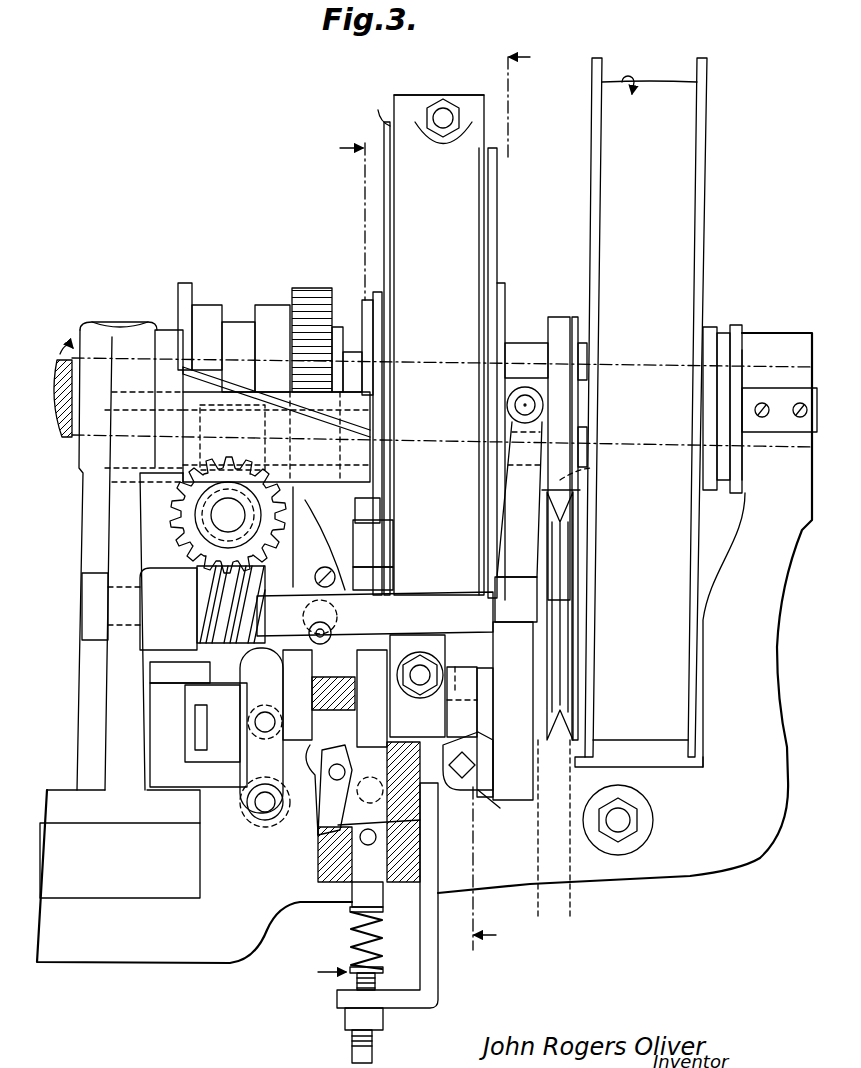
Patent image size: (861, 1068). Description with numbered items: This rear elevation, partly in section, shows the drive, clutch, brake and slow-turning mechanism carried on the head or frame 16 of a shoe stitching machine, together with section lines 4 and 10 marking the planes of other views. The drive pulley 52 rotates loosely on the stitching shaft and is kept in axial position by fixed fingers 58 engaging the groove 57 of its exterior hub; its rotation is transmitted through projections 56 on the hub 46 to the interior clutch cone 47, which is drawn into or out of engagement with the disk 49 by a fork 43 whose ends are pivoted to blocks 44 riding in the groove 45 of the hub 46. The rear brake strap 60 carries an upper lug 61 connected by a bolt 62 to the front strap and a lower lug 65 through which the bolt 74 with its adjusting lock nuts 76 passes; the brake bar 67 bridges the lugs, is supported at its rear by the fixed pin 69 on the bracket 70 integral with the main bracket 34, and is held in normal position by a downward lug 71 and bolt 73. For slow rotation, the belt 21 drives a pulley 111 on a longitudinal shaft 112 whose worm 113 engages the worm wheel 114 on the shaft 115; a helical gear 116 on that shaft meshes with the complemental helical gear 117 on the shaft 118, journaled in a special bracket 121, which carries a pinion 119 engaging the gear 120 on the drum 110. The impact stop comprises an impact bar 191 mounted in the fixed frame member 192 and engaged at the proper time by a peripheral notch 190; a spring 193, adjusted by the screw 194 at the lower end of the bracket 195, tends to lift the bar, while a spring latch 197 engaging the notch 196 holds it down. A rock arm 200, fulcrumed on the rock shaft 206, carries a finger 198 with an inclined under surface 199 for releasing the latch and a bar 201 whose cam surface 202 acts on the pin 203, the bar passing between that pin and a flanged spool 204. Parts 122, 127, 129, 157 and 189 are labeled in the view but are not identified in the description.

The section line 4- 4 is at (501, 501).
The section line 10- 10 is at (327, 559).
The head or frame 16 is at (130, 594).
The belt 21 is at (580, 482).
The bracket 34 is at (427, 648).
The fork 43 is at (518, 522).
The blocks 44 is at (545, 390).
The groove 45 is at (530, 333).
The hub 46 is at (575, 340).
The clutch member or cone 47 is at (502, 297).
The disk 49 is at (372, 343).
The drive pulley 52 is at (641, 412).
The projections 56 is at (580, 417).
The groove 57 is at (735, 325).
The fixed fingers 58 is at (740, 405).
The rear brake strap 60 is at (439, 345).
The lug 61 is at (412, 100).
The bolt 62 is at (445, 118).
The lower lug 65 is at (417, 686).
The brake bar 67 is at (461, 750).
The fixed pin 69 is at (462, 689).
The fixed bracket 70 is at (520, 690).
The lug 71 is at (499, 806).
The bolt 73 is at (470, 745).
The bolt 74 is at (418, 665).
The adjusting lock nuts 76 is at (428, 655).
The drum 110 is at (208, 305).
The pulley 111 is at (578, 565).
The longitudinal shaft 112 is at (375, 614).
The worm 113 is at (232, 640).
The worm wheel 114 is at (215, 560).
The shaft 115 is at (228, 515).
The helical gear 116 is at (196, 500).
The complemental helical gear 117 is at (232, 429).
The shaft 118 is at (372, 458).
The pinion 119 is at (380, 505).
The gear 120 is at (305, 290).
The special bracket 121 is at (193, 390).
The plate 122 is at (352, 305).
The pawl 127 is at (84, 384).
The arm 129 is at (183, 283).
The block 157 is at (265, 305).
The block 189 is at (354, 553).
The peripheral notch 190 is at (385, 575).
The impact bar 191 is at (368, 890).
The fixed frame member 192 is at (318, 860).
The spring 193 is at (350, 915).
The adjusting screw 194 is at (352, 985).
The bracket 195 is at (437, 990).
The notch 196 is at (405, 818).
The spring latch 197 is at (310, 825).
The finger 198 is at (300, 698).
The inclined under surface 199 is at (301, 790).
The rock arm 200 is at (261, 730).
The bar 201 is at (295, 805).
The cam surface 202 is at (422, 860).
The pin 203 is at (376, 837).
The flanged roller or spool 204 is at (365, 760).
The fulcrum 206 is at (309, 637).